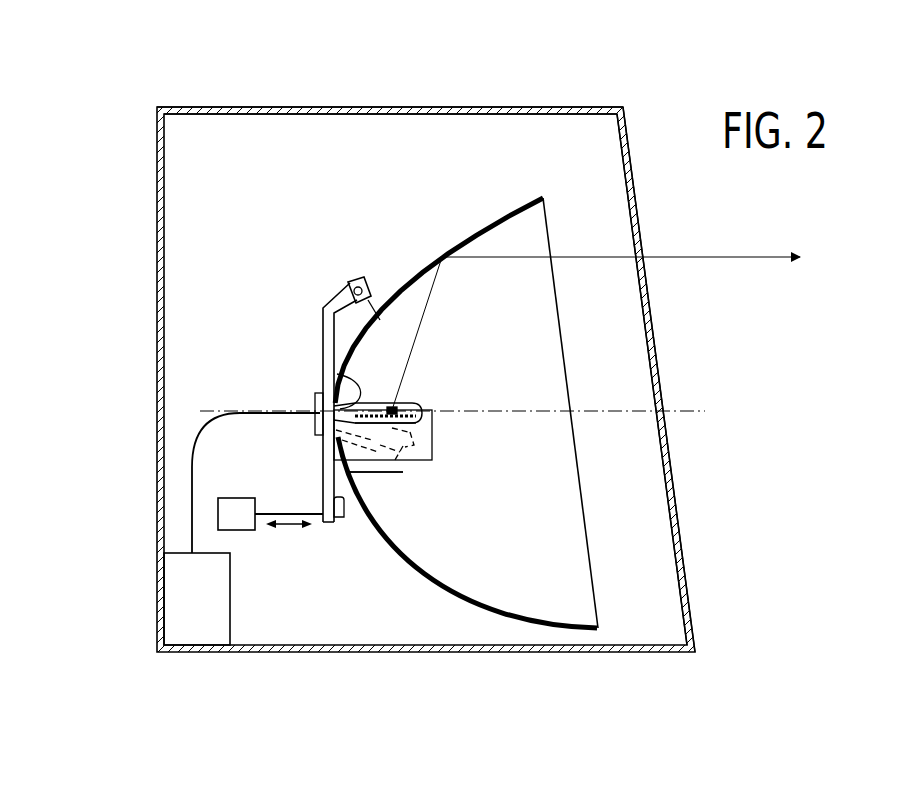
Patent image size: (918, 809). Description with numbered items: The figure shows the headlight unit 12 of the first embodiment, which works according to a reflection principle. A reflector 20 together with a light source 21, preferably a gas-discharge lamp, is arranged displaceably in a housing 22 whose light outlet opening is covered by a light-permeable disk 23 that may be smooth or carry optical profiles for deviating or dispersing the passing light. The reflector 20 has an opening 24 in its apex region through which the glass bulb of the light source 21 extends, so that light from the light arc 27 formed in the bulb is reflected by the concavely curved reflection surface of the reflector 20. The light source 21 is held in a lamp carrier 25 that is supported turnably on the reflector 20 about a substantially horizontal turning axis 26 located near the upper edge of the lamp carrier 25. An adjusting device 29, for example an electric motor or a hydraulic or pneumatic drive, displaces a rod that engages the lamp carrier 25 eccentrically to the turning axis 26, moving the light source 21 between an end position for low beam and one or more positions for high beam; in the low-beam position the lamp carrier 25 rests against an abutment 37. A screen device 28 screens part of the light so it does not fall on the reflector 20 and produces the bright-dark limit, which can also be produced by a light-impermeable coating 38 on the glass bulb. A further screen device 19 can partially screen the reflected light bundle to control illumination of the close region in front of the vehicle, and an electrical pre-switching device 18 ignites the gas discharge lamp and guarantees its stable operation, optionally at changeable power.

The headlight unit 12 is at (122, 236).
The electrical pre-switching device 18 is at (205, 608).
The screen device 19 is at (384, 478).
The reflector 20 is at (521, 622).
The light source 21 is at (412, 403).
The housing 22 is at (400, 107).
The light-permeable disk 23 is at (655, 352).
The opening 24 is at (336, 374).
The lamp carrier 25 is at (320, 333).
The turning axis 26 is at (357, 282).
The light arc 27 is at (395, 408).
The screen device 28 is at (418, 462).
The adjusting device 29 is at (228, 508).
The abutment 37 is at (343, 518).
The light-impermeable coating 38 is at (410, 421).